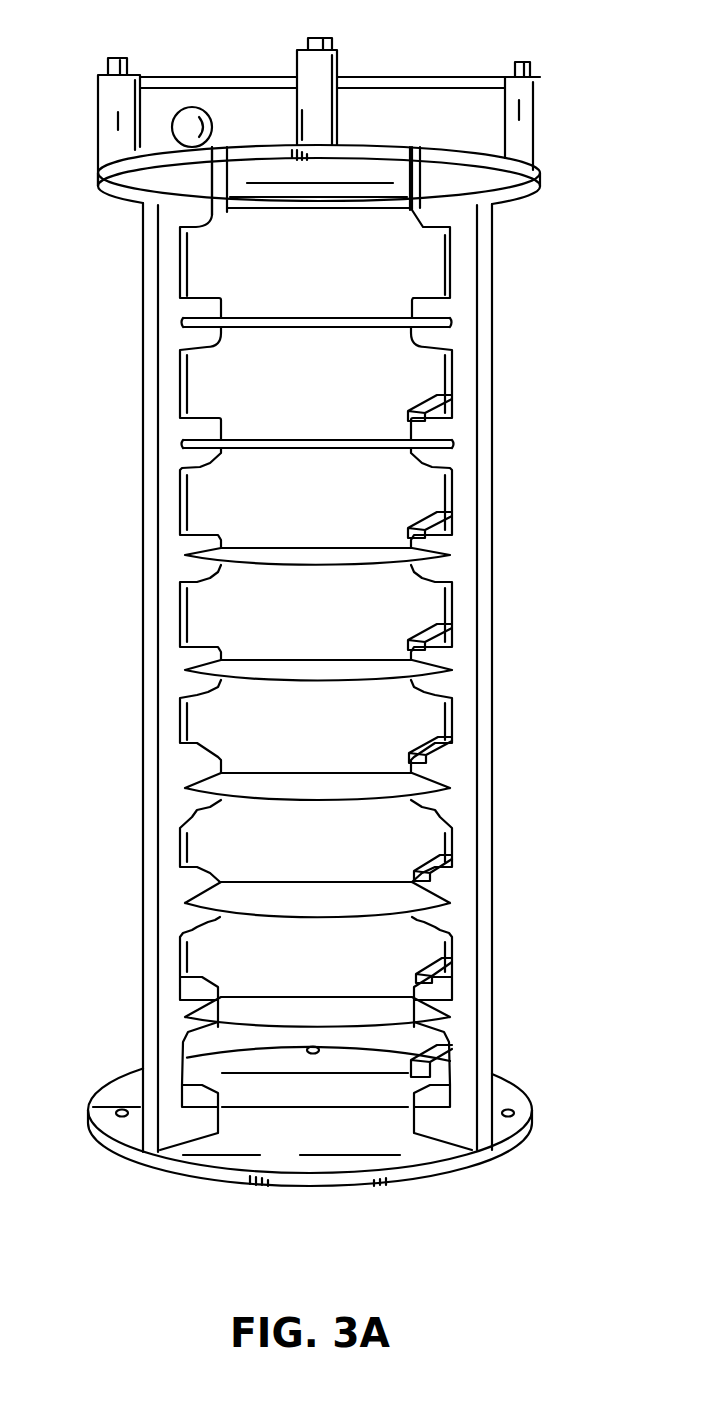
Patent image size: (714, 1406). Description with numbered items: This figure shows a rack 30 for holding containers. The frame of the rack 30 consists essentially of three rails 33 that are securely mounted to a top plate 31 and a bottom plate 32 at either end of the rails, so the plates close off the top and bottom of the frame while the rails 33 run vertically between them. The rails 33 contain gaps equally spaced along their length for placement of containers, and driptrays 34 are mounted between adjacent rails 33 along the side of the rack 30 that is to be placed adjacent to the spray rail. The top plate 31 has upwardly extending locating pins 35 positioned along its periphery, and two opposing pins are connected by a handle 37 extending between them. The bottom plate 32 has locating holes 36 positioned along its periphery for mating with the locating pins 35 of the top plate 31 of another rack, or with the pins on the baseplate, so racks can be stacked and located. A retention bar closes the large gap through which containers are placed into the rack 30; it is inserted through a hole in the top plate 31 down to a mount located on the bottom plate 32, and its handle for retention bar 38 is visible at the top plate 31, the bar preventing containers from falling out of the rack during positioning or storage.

The rack 30 is at (518, 578).
The top plate 31 is at (127, 186).
The bottom plate 32 is at (247, 1187).
The rails 33 is at (143, 487).
The driptray 34 is at (343, 682).
The locating pins 35 is at (98, 113).
The locating holes 36 is at (312, 1044).
The handle 37 is at (437, 78).
The handle for retention bar 38 is at (212, 132).